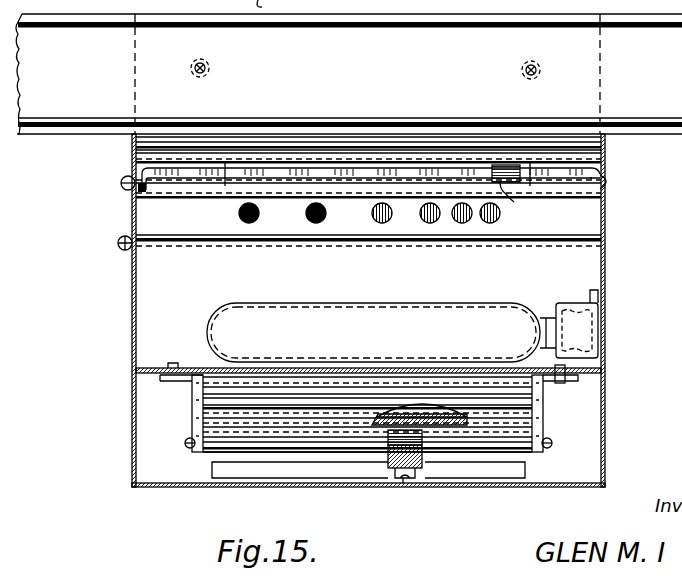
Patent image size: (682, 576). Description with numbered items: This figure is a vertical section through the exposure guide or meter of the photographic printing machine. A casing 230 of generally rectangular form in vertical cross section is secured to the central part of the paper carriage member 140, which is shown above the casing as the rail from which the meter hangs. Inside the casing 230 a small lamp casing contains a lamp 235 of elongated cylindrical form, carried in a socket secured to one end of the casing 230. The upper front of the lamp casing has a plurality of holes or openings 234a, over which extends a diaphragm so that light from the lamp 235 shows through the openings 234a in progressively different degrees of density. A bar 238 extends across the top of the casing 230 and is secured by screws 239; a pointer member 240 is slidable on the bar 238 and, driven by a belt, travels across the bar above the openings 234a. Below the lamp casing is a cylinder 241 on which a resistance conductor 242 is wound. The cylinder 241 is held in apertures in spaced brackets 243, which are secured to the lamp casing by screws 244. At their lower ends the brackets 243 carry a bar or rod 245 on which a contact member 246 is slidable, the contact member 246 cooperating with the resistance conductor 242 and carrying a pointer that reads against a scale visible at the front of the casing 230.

The paper carriage member 140 is at (582, 28).
The casing 230 is at (608, 222).
The screws 239 is at (126, 183).
The pointer member 240 is at (524, 193).
The holes or openings 234a is at (421, 209).
The lamp 235 is at (363, 311).
The bar 238 is at (563, 311).
The cylinder 241 is at (273, 396).
The screws 244 is at (173, 381).
The brackets 243 is at (195, 453).
The resistance conductor 242 is at (423, 448).
The bar or rod 245 is at (520, 445).
The contact member 246 is at (426, 448).